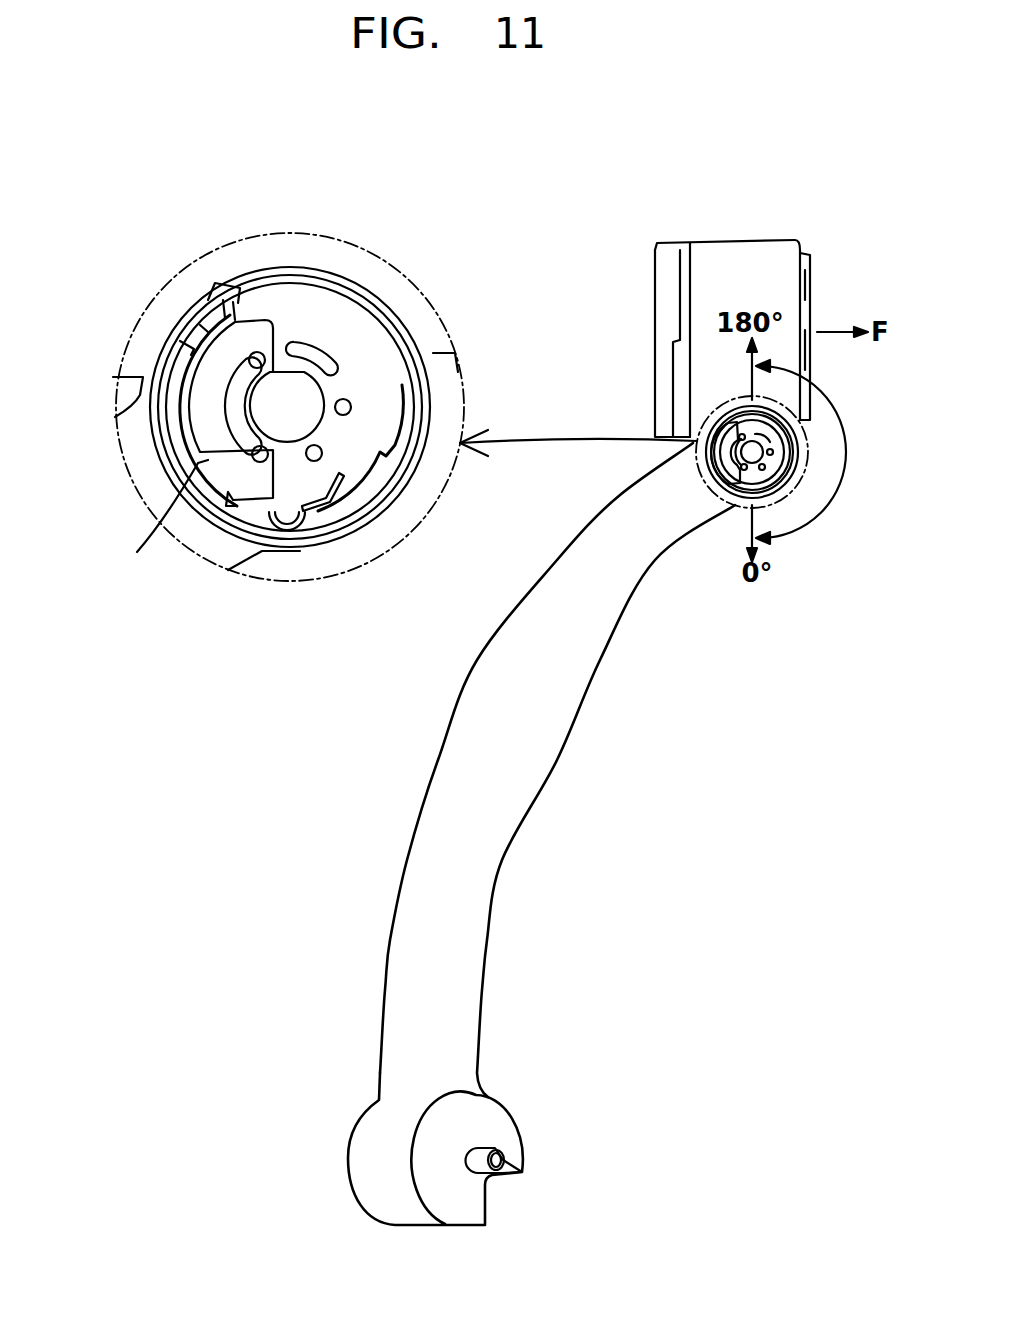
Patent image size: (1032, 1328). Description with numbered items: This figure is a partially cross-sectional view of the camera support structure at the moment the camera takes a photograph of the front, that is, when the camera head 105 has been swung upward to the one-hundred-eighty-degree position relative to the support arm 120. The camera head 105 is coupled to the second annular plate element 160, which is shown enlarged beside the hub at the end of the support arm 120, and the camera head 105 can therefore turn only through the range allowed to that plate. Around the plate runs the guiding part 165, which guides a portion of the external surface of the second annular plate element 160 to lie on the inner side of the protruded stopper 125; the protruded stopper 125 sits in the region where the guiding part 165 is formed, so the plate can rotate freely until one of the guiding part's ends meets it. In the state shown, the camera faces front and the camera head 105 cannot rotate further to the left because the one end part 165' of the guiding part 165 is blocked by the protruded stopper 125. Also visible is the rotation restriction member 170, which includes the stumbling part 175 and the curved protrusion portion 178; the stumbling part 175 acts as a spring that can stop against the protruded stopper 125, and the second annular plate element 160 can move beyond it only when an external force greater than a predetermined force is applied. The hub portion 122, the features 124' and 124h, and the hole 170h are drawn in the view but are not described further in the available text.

The camera head 105 is at (743, 257).
The support arm 120 is at (515, 777).
The hub coupling portion 122 is at (806, 489).
The stopper protrusion 124' is at (402, 478).
The hole 124h is at (287, 525).
The protruded stopper 125 is at (200, 325).
The second annular plate element 160 is at (350, 318).
The guiding part 165 is at (314, 452).
The one end part of the guiding part 165' is at (187, 261).
The rotation restriction member 170 is at (205, 432).
The bracket hole 170h is at (257, 352).
The stumbling part 175 is at (273, 407).
The curved protrusion portion 178 is at (330, 505).